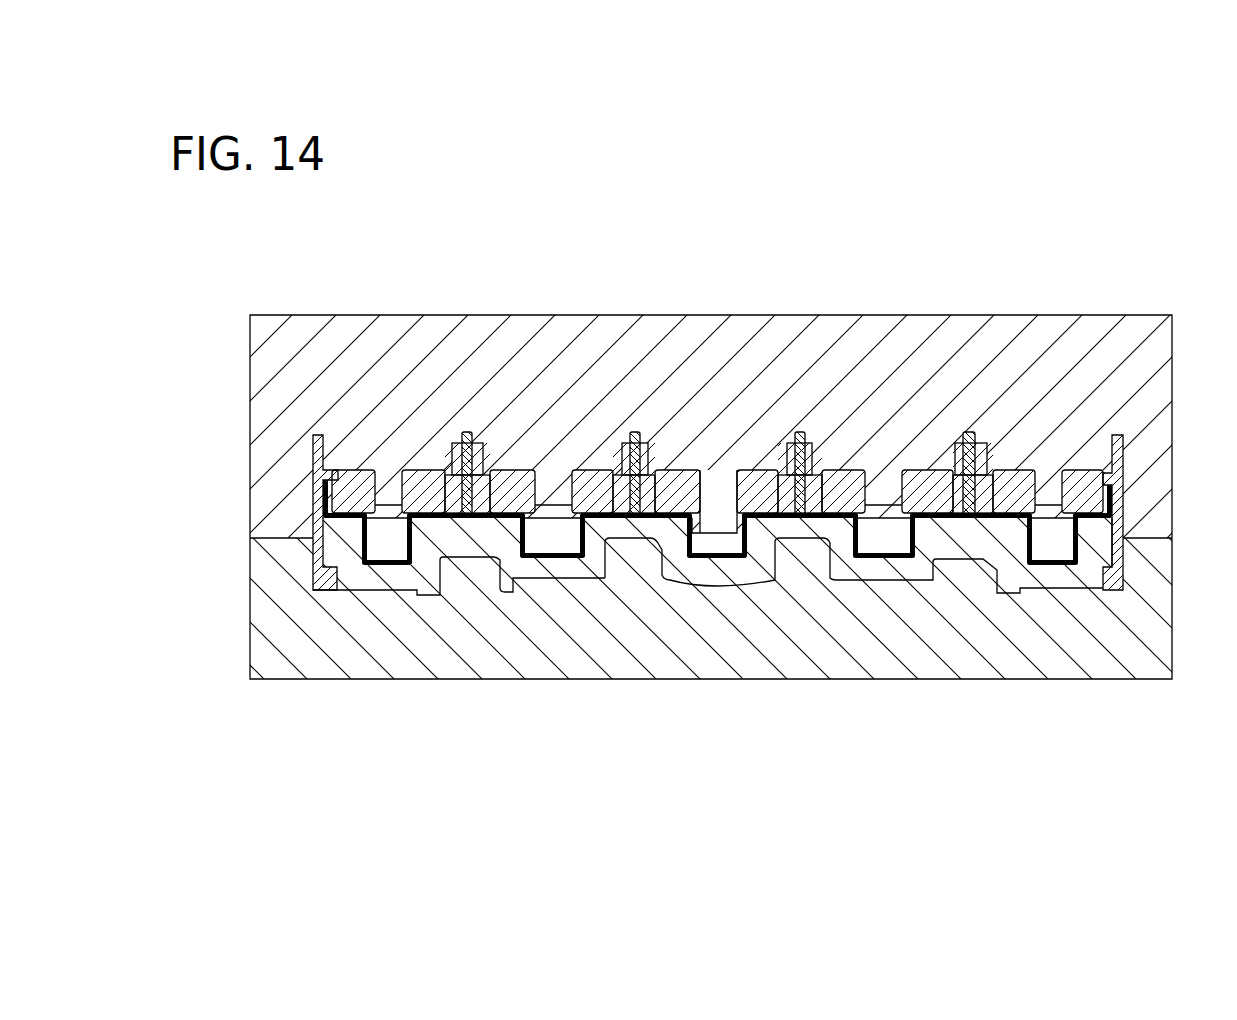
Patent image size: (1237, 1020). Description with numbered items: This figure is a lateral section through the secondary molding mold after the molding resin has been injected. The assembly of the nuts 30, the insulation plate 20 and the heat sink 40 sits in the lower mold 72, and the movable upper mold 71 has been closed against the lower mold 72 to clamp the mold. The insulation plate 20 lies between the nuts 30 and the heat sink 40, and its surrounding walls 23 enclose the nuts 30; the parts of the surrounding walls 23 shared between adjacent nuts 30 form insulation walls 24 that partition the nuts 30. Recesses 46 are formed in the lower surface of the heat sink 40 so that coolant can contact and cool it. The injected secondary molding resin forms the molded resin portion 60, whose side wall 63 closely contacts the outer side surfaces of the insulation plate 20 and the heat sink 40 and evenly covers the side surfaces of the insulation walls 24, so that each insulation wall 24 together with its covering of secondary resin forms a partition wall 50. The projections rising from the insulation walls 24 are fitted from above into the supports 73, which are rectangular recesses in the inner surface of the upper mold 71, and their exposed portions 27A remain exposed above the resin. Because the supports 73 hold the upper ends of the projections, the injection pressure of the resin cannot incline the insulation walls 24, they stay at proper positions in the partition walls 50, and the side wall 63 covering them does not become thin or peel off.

The upper mold 71 is at (1153, 353).
The lower mold 72 is at (1047, 660).
The heat sink 40 is at (904, 589).
The recess 46 is at (607, 558).
The insulation plate 20 is at (724, 569).
The molded resin portion 60 is at (1135, 568).
The side wall 63 is at (481, 455).
The nut 30 is at (362, 450).
The insulation wall 24 is at (443, 443).
The surrounding wall 23 is at (778, 376).
The support 73 is at (475, 432).
The exposed portion 27A is at (640, 433).
The partition wall 50 is at (1158, 249).